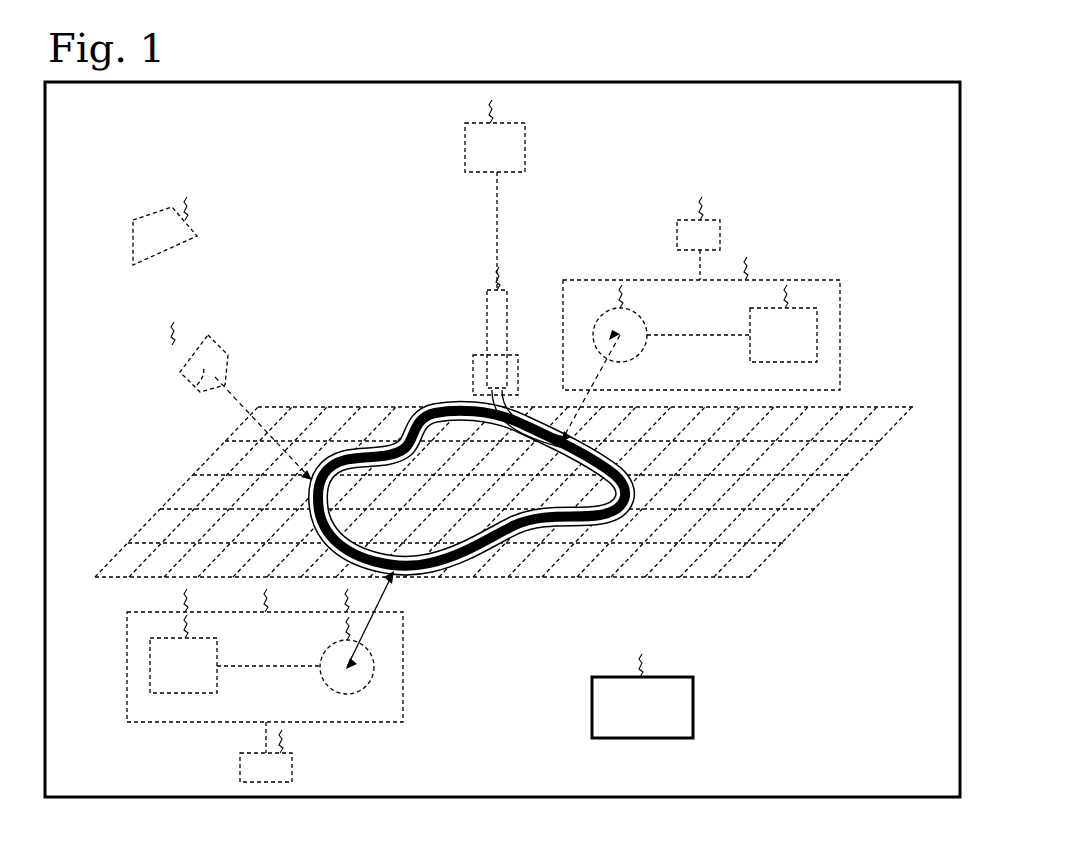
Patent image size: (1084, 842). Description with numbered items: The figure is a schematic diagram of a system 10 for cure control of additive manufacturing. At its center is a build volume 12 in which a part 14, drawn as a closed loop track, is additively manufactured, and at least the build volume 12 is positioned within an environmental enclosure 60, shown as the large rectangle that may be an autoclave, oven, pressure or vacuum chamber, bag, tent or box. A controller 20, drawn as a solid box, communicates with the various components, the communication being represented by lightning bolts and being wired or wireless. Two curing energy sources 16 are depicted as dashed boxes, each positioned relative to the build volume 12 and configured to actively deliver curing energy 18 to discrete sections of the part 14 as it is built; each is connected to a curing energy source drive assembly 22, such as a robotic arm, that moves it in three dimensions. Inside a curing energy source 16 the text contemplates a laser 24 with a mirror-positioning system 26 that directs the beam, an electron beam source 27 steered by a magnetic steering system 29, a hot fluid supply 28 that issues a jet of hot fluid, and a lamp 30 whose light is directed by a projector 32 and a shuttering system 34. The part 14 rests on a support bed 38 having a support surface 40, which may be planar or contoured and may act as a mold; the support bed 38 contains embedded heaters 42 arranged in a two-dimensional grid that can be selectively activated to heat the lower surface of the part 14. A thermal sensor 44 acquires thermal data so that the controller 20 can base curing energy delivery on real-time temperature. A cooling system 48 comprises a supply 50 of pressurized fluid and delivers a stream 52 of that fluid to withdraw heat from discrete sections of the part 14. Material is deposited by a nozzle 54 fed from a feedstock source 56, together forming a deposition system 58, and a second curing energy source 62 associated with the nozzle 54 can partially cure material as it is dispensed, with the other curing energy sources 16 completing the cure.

The system for cure control of additive manufacturing 10 is at (820, 80).
The build volume 12 is at (400, 271).
The part 14 is at (440, 412).
The curing energy source 16 is at (475, 356).
The curing energy 18 is at (575, 402).
The controller 20 is at (648, 677).
The curing energy source drive assembly 22 is at (675, 226).
The laser 24 is at (516, 503).
The mirror-positioning system 26 is at (483, 504).
The electron beam source 27 is at (484, 503).
The hot fluid supply 28 is at (495, 503).
The magnetic steering system 29 is at (471, 533).
The lamp 30 is at (820, 322).
The projector 32 is at (483, 504).
The shuttering system 34 is at (642, 325).
The support bed 38 is at (340, 406).
The support surface 40 is at (504, 470).
The embedded heaters 42 is at (735, 525).
The thermal sensor 44 is at (200, 222).
The cooling system 48 is at (226, 345).
The supply of pressurized fluid 50 is at (195, 388).
The stream of pressurized fluid 52 is at (243, 400).
The nozzle 54 is at (483, 338).
The feedstock source 56 is at (518, 123).
The deposition system 58 is at (443, 160).
The environmental enclosure 60 is at (904, 80).
The curing energy source associated with nozzle 62 is at (470, 380).